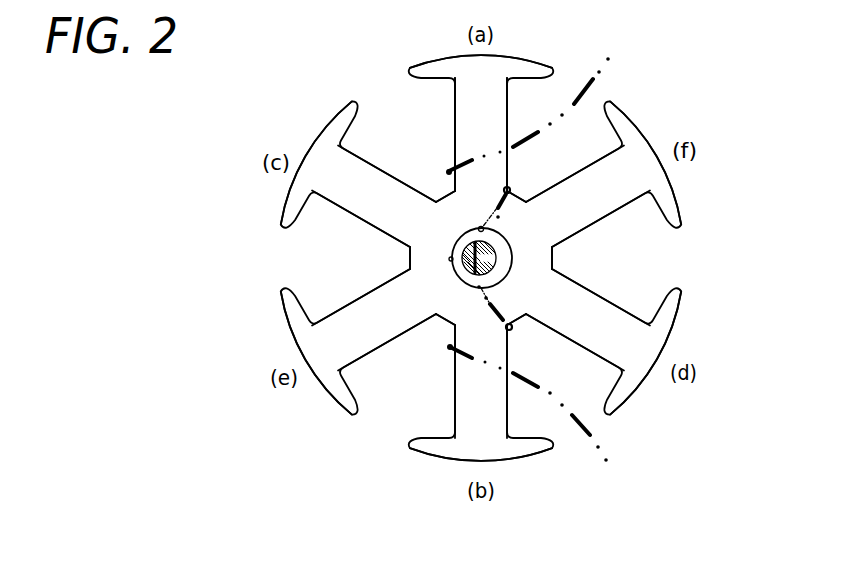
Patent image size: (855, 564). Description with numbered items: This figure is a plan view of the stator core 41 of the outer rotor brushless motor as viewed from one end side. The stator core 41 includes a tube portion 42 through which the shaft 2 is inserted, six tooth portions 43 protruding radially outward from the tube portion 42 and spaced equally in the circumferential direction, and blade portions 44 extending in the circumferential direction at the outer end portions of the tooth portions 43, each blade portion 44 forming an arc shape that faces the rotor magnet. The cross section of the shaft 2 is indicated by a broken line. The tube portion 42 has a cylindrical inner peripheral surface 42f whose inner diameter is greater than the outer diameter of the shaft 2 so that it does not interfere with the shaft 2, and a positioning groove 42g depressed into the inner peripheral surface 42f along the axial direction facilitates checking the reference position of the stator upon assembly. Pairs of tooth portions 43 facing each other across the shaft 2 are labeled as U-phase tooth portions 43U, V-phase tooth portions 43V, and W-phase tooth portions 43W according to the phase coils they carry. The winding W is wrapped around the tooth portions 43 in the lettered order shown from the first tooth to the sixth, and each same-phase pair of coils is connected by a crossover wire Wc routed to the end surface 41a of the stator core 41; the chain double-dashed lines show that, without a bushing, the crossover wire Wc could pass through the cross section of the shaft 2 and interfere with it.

The shaft 2 is at (512, 258).
The stator core 41 is at (642, 103).
The end surface 41a is at (448, 234).
The tube portion 42 is at (444, 321).
The inner peripheral surface 42f is at (449, 259).
The positioning groove 42g is at (481, 228).
The tooth portions 43 is at (481, 134).
The U-phase tooth portions 43U is at (457, 93).
The V-phase tooth portions 43V is at (364, 221).
The W-phase tooth portions 43W is at (375, 289).
The blade portions 44 is at (440, 60).
The winding W is at (591, 72).
The crossover wire Wc is at (498, 217).